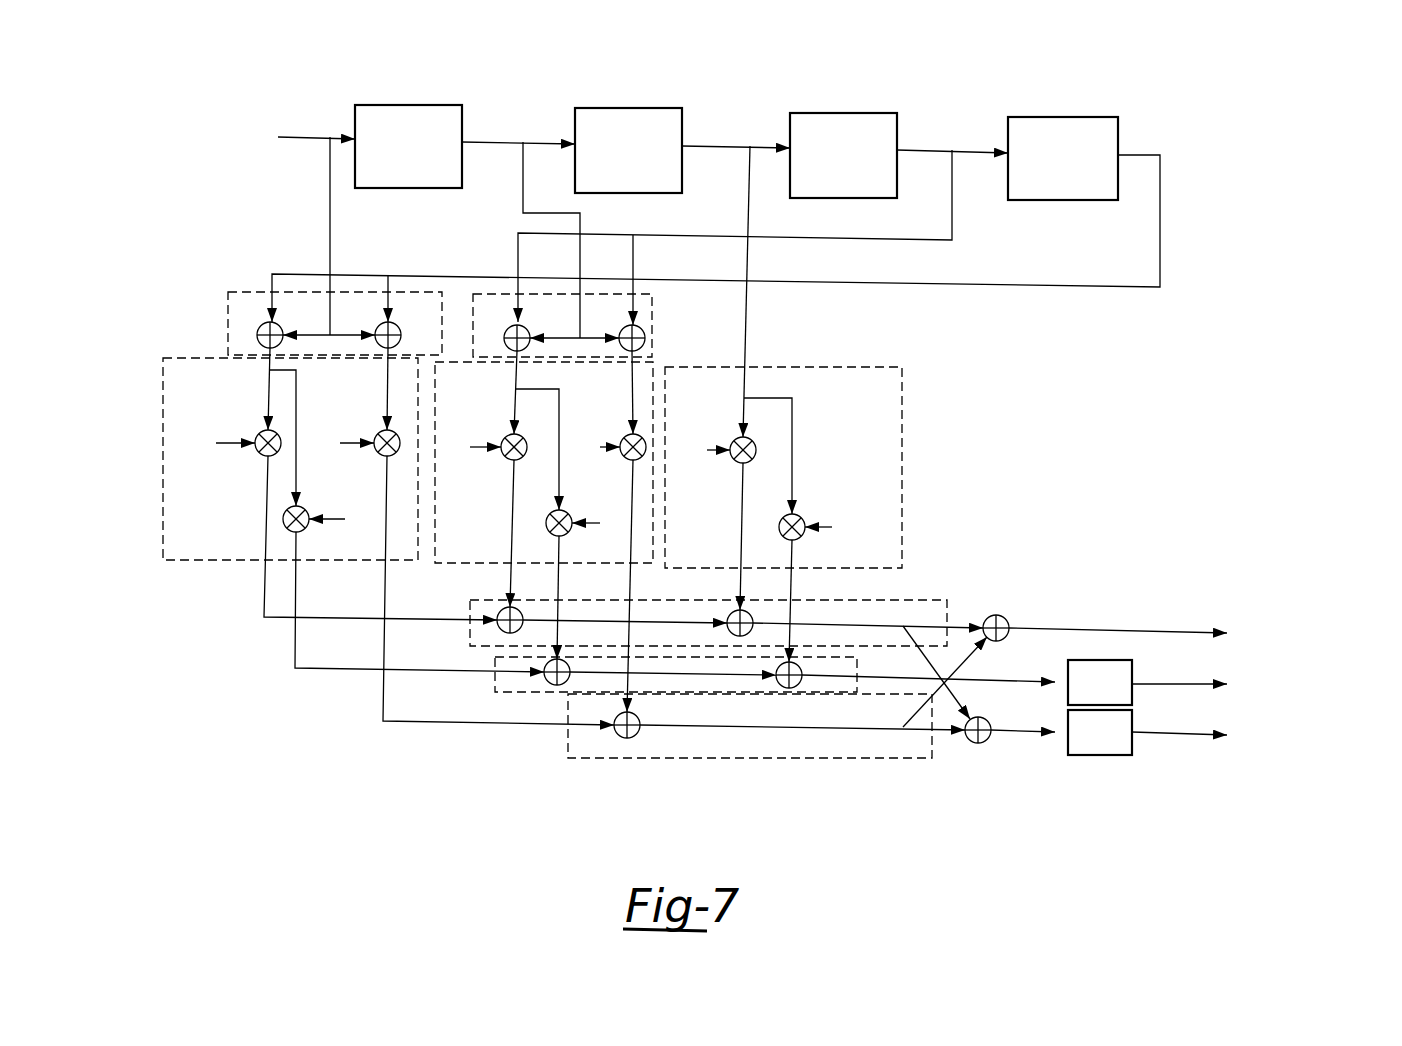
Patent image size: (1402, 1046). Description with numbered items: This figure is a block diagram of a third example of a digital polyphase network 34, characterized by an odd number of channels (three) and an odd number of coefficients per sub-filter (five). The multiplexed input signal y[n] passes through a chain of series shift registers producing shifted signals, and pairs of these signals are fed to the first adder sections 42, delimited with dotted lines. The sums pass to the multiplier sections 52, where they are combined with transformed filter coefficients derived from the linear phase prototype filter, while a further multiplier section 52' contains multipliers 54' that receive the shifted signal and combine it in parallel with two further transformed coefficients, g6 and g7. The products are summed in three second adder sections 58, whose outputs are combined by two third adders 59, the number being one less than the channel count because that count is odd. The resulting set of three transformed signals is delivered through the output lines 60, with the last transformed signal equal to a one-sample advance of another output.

The digital polyphase network 34 is at (1216, 161).
The first adder sections 42 is at (225, 322).
The multiplier sections 52 is at (355, 455).
The further multiplier section 52' is at (864, 467).
The multipliers 54' is at (800, 349).
The second adder sections 58 is at (470, 610).
The third adders 59 is at (1006, 621).
The output lines 60 is at (923, 603).